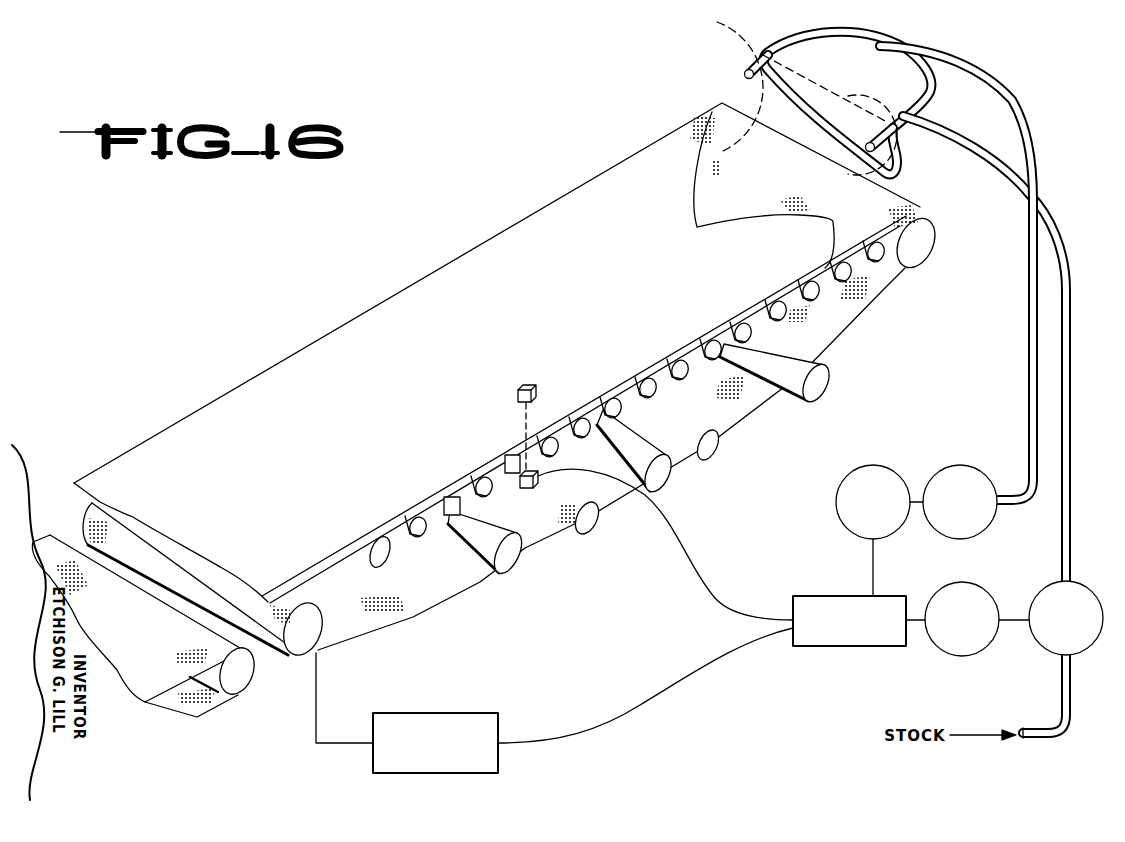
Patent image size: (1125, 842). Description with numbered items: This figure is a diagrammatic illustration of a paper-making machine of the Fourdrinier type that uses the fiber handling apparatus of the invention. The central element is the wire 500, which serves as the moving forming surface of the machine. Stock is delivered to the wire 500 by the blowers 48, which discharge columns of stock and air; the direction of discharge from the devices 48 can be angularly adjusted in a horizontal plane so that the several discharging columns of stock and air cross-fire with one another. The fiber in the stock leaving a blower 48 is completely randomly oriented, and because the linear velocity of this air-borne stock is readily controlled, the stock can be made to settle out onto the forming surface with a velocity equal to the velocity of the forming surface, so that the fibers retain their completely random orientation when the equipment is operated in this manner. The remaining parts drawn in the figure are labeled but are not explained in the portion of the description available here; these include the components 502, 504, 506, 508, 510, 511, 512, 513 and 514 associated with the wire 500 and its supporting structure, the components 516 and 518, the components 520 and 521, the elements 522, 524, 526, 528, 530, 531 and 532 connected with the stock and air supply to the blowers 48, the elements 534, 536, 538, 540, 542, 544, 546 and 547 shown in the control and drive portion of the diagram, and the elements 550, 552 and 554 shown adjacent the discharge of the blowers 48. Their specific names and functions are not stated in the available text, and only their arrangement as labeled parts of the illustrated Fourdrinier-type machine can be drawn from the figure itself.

The blower 48 is at (742, 60).
The wire 500 is at (700, 130).
The roll 502 is at (920, 240).
The rollers 504 is at (847, 275).
The roller 506 is at (381, 553).
The roll 508 is at (308, 624).
The drive roll 510 is at (510, 555).
The roller 511 is at (588, 519).
The drive roll 512 is at (662, 475).
The roller 513 is at (712, 445).
The drive roll 514 is at (820, 384).
The bracket 516 is at (450, 497).
The bracket 518 is at (512, 458).
The sheet 520 is at (297, 434).
The web 521 is at (118, 635).
The stock supply line 522 is at (1062, 686).
The pump 524 is at (1070, 581).
The stock conduit 526 is at (958, 137).
The spray ring 528 is at (792, 102).
The air compressor 530 is at (958, 465).
The air line 531 is at (963, 60).
The ring manifold 532 is at (868, 38).
The motor 534 is at (872, 465).
The motor 536 is at (961, 582).
The control equipment 538 is at (832, 596).
The sensor 540 is at (537, 388).
The sensor 542 is at (537, 482).
The control line 544 is at (682, 533).
The speed regulator equipment 546 is at (447, 713).
The control line 547 is at (639, 703).
The spray 550 is at (778, 45).
The spray pattern 552 is at (760, 42).
The spray streams 554 is at (760, 92).